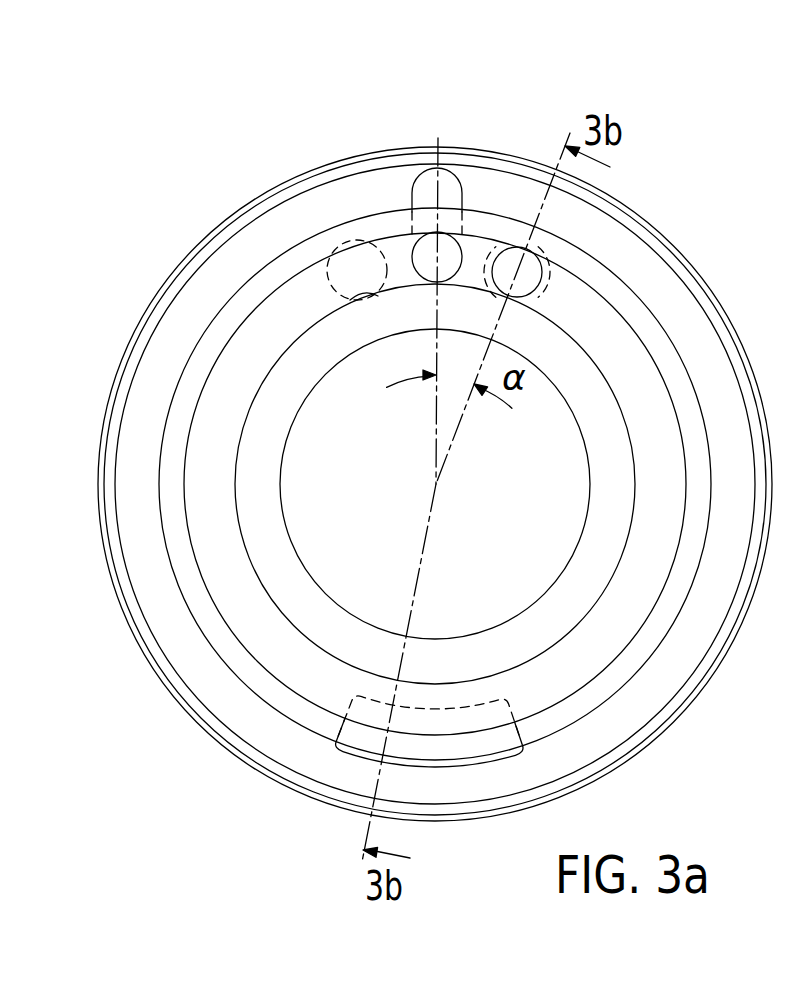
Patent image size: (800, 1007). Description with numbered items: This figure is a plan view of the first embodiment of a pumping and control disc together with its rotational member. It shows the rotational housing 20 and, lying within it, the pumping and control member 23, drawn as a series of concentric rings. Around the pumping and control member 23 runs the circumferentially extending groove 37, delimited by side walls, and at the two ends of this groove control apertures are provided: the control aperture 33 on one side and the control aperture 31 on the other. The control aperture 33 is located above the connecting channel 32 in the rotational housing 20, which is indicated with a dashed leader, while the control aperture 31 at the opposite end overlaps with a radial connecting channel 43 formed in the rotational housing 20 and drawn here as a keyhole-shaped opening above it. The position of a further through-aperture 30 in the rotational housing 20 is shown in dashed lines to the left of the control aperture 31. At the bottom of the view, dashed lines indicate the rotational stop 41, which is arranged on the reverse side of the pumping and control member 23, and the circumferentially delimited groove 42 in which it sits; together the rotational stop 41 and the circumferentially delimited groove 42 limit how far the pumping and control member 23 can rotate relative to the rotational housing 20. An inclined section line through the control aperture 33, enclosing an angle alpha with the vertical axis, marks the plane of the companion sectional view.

The rotational housing 20 is at (133, 330).
The pumping and control member 23 is at (205, 317).
The circumferentially extending groove 37 is at (273, 310).
The further through-aperture 30 is at (345, 250).
The control aperture 31 is at (418, 252).
The radial connecting channel 43 is at (428, 187).
The control aperture 33 is at (510, 258).
The connecting channel 32 is at (558, 240).
The rotational stop 41 is at (437, 737).
The circumferentially delimited groove 42 is at (520, 760).